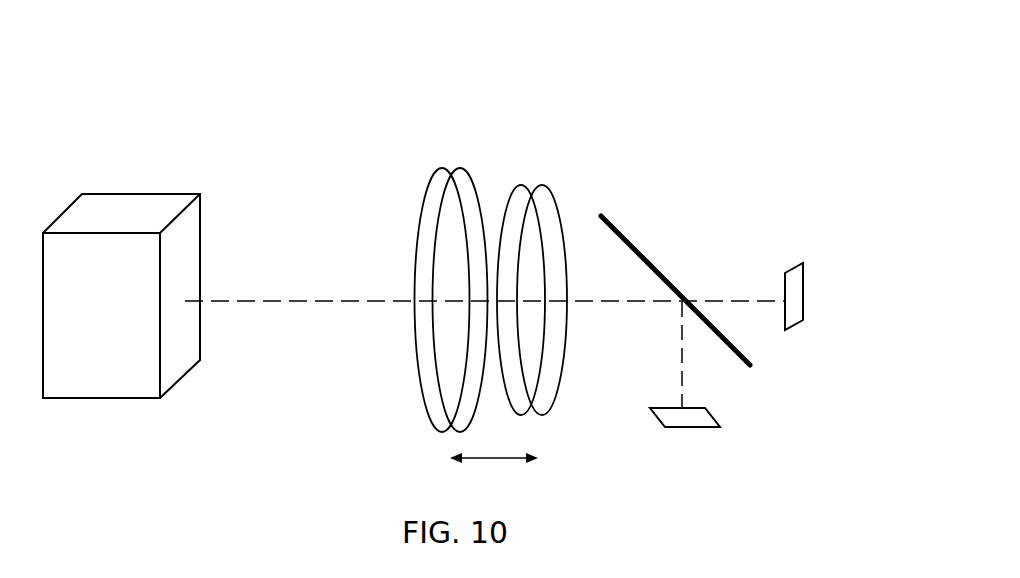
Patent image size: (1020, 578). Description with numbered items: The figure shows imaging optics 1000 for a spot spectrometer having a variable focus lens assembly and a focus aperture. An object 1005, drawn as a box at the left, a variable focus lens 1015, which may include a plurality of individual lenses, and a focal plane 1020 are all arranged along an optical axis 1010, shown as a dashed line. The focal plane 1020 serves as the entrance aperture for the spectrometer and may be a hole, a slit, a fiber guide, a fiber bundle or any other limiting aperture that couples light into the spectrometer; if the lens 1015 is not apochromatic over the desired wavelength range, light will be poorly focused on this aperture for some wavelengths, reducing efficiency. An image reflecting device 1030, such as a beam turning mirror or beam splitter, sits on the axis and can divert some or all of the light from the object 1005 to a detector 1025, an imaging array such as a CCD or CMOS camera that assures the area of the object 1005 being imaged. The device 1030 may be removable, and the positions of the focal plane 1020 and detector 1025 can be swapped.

The imaging optics 1000 is at (822, 73).
The object 1005 is at (107, 398).
The optical axis 1010 is at (275, 300).
The variable focus lens 1015 is at (530, 187).
The focal plane 1020 is at (805, 290).
The detector 1025 is at (692, 427).
The image reflecting device 1030 is at (635, 247).